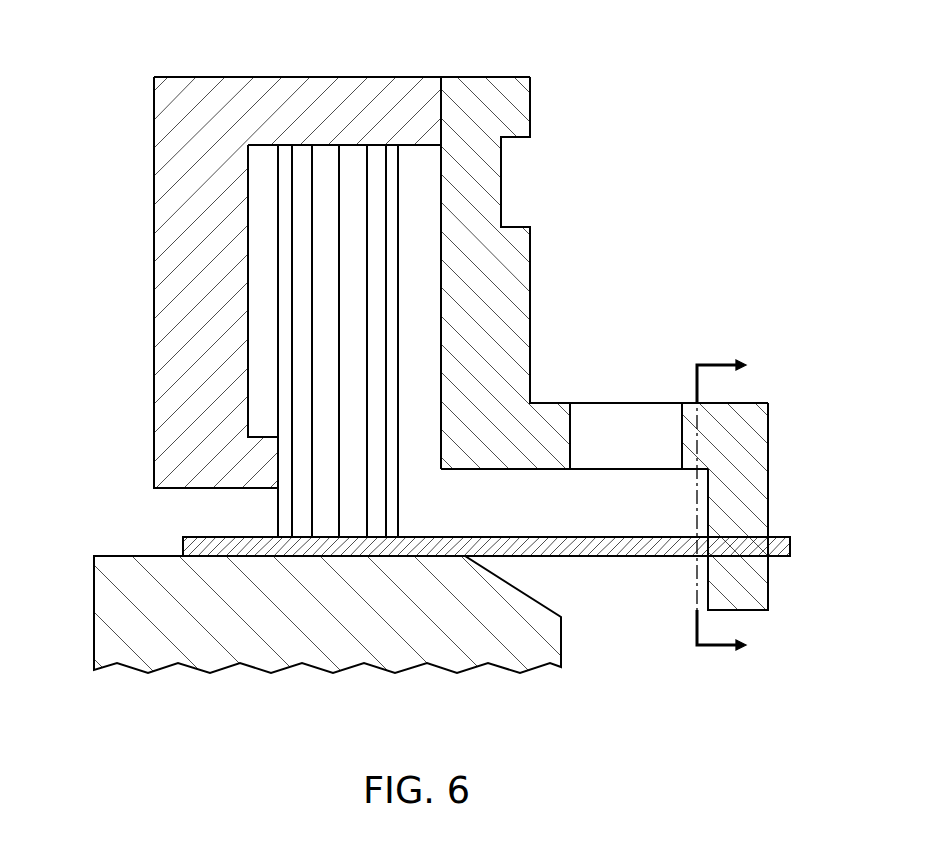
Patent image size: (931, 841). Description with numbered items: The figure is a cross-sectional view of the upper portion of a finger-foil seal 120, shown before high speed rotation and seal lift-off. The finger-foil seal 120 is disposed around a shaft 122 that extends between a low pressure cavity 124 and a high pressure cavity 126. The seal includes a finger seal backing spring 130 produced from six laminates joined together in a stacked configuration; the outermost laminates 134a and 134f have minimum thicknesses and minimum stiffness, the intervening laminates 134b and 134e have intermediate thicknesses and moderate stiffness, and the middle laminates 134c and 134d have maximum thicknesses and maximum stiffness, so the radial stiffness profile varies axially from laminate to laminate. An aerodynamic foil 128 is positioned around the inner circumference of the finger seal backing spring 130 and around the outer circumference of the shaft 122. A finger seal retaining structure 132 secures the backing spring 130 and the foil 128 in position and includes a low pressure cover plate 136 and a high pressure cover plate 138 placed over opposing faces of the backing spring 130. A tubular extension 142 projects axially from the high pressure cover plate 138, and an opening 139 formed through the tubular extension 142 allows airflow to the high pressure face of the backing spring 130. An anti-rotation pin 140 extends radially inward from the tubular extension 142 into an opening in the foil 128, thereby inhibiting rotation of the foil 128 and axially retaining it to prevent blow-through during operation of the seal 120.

The finger-foil seal 120 is at (428, 341).
The shaft 122 is at (99, 619).
The low pressure cavity 124 is at (292, 290).
The high pressure cavity 126 is at (604, 290).
The aerodynamic foil 128 is at (623, 557).
The finger seal backing spring 130 is at (338, 341).
The finger seal retaining structure 132 is at (148, 455).
The outermost laminate 134a is at (393, 311).
The intervening laminate 134b is at (378, 355).
The middle laminate 134c is at (356, 406).
The middle laminate 134d is at (322, 406).
The intervening laminate 134e is at (300, 355).
The outermost laminate 134f is at (283, 311).
The low pressure cover plate 136 is at (158, 195).
The high pressure cover plate 138 is at (498, 183).
The opening 139 is at (639, 412).
The anti-rotation pin 140 is at (757, 473).
The tubular extension 142 is at (541, 471).